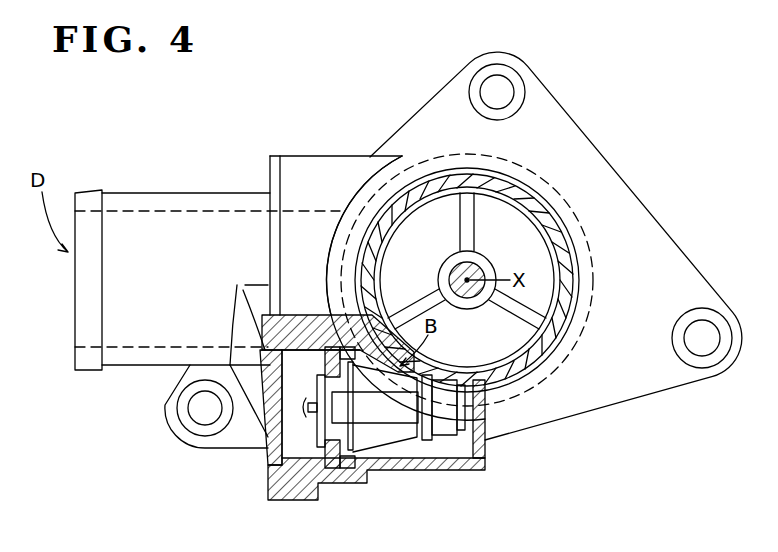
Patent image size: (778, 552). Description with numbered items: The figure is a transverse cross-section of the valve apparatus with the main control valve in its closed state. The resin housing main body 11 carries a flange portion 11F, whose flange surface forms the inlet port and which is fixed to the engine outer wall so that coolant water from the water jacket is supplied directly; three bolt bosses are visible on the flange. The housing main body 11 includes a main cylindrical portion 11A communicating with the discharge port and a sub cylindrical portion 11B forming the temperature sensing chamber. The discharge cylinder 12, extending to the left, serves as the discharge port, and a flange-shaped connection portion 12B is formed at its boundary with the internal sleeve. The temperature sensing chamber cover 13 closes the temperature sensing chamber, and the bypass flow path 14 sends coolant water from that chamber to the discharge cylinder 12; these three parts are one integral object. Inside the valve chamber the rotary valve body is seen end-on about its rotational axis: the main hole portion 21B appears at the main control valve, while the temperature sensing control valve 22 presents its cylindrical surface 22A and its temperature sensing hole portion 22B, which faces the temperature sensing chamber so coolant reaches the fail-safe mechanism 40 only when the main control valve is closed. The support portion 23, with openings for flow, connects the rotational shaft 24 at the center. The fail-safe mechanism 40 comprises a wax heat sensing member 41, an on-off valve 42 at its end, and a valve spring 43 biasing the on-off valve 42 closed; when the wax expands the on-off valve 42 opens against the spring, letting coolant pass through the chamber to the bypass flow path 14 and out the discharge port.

The housing main body 11 is at (517, 147).
The main cylindrical portion 11A is at (323, 160).
The sub cylindrical portion 11B is at (293, 500).
The flange portion 11F is at (427, 110).
The discharge cylinder 12 is at (128, 363).
The connection portion 12B is at (268, 176).
The temperature sensing chamber cover 13 is at (268, 475).
The bypass flow path 14 is at (237, 313).
The main hole portion 21B is at (420, 177).
The temperature sensing control valve 22 is at (588, 287).
The cylindrical surface 22A is at (563, 247).
The temperature sensing hole portion 22B is at (473, 357).
The support portion 23 is at (470, 217).
The rotational shaft 24 is at (455, 266).
The fail-safe mechanism 40 is at (465, 470).
The heat sensing member 41 is at (418, 462).
The on-off valve 42 is at (316, 415).
The valve spring 43 is at (442, 450).